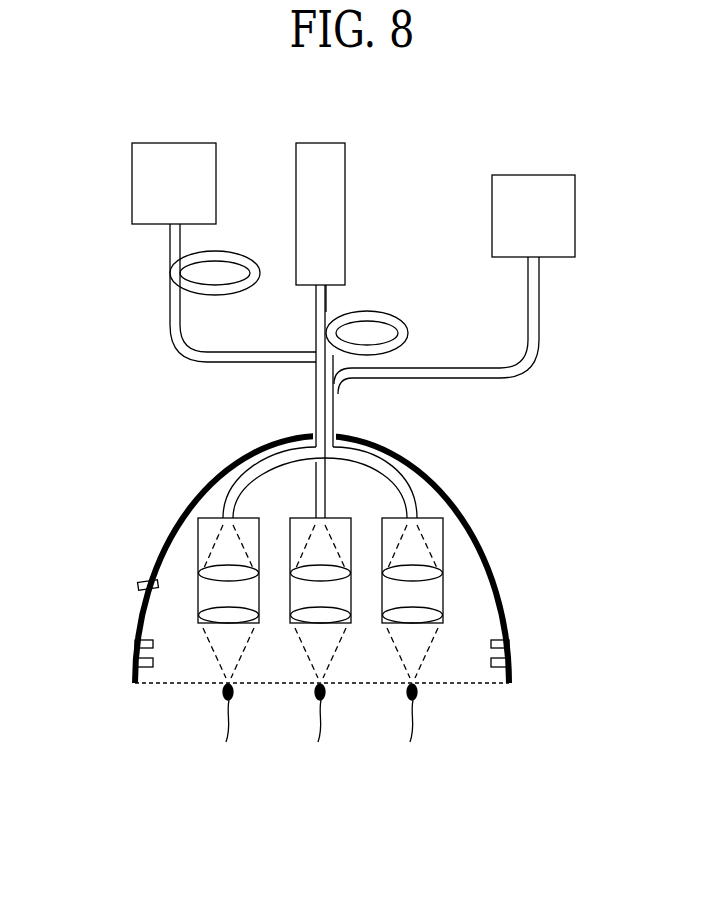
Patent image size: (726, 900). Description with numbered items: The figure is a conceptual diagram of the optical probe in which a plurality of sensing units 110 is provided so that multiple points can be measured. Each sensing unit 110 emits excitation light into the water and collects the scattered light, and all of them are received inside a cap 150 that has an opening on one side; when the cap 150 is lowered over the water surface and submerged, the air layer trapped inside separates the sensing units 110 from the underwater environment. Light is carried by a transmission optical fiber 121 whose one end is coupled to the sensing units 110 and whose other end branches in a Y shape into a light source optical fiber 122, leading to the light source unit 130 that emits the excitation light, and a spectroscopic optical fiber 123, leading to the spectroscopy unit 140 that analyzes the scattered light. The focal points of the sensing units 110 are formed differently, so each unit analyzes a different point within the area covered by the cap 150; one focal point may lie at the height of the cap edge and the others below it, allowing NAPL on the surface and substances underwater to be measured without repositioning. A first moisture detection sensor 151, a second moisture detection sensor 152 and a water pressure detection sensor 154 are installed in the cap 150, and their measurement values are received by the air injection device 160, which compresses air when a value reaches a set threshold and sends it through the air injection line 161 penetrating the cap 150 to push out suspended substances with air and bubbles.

The sensing unit 110 is at (203, 600).
The transmission optical fiber 121 is at (316, 387).
The light source optical fiber 122 is at (170, 310).
The spectroscopic optical fiber 123 is at (397, 320).
The light source unit 130 is at (172, 158).
The spectroscopy unit 140 is at (318, 158).
The cap 150 is at (195, 487).
The first moisture detection sensor 151 is at (136, 662).
The second moisture detection sensor 152 is at (136, 644).
The water pressure detection sensor 154 is at (138, 583).
The air injection device 160 is at (532, 192).
The air injection line 161 is at (540, 307).